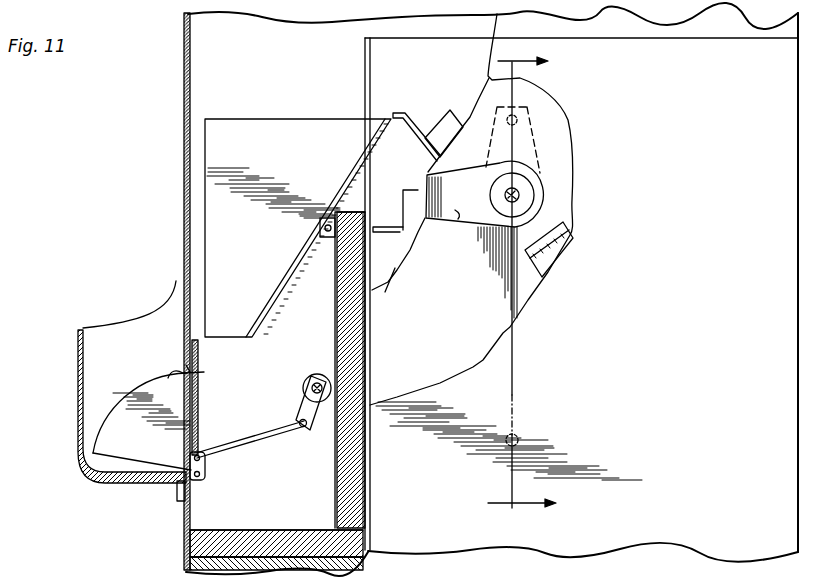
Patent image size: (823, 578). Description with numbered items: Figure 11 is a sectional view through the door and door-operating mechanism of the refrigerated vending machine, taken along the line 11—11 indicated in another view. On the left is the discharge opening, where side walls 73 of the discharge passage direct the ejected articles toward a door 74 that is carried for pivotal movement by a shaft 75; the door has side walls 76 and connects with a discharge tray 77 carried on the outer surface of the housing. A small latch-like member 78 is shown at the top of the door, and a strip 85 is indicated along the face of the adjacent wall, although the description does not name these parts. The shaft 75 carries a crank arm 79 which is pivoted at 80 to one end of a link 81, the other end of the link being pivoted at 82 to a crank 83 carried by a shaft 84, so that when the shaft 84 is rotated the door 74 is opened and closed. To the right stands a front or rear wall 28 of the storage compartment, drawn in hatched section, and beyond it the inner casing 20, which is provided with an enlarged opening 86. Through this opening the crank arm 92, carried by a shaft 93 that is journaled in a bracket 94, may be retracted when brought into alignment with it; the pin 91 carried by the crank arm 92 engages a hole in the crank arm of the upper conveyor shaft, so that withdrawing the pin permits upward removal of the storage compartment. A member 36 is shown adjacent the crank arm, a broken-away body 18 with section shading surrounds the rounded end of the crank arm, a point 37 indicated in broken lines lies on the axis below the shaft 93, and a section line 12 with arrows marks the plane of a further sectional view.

The side wall 11 is at (184, 124).
The section line 12- 12 is at (522, 286).
The drum body 18 is at (498, 345).
The inner casing 20 is at (390, 284).
The front and rear walls 28 is at (365, 97).
The guide bracket 36 is at (443, 116).
The pivot axis 37 is at (537, 440).
The side walls 73 is at (215, 192).
The door 74 is at (198, 400).
The shaft 75 is at (198, 478).
The side walls 76 is at (147, 394).
The discharge tray 77 is at (118, 482).
The latch hook 78 is at (173, 375).
The crank arm 79 is at (205, 468).
The pivot 80 is at (193, 456).
The link 81 is at (252, 434).
The pivot 82 is at (305, 428).
The crank 83 is at (305, 409).
The shaft 84 is at (310, 378).
The wall face 85 is at (352, 460).
The enlarged opening 86 is at (455, 218).
The pin 91 is at (535, 114).
The crank arm 92 is at (490, 178).
The shaft 93 is at (520, 195).
The bracket 94 is at (565, 246).